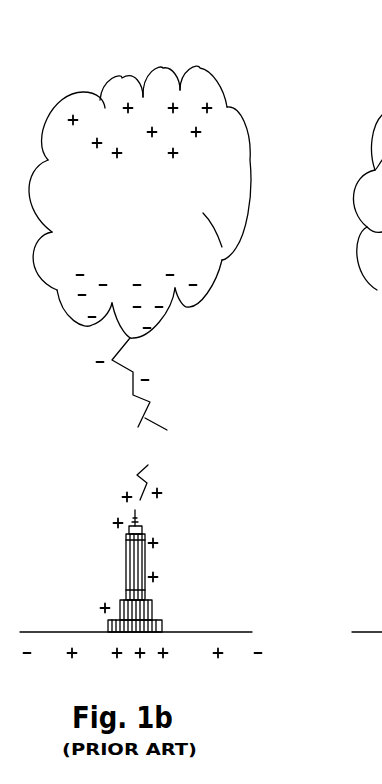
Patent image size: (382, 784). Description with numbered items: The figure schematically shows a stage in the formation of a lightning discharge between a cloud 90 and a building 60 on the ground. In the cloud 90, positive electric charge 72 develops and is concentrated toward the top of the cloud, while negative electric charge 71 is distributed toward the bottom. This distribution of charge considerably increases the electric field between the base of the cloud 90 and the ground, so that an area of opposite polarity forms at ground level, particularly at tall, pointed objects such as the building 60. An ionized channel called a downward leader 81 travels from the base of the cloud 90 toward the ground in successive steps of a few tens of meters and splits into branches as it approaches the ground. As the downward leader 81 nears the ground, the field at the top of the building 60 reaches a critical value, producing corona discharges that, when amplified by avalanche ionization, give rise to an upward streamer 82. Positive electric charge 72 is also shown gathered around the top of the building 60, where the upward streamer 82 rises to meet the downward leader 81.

The cloud 90 is at (202, 68).
The positive electric charge 72 is at (213, 130).
The negative electric charge 71 is at (208, 285).
The downward leader 81 is at (150, 402).
The upward streamer 82 is at (148, 465).
The building 60 is at (150, 562).